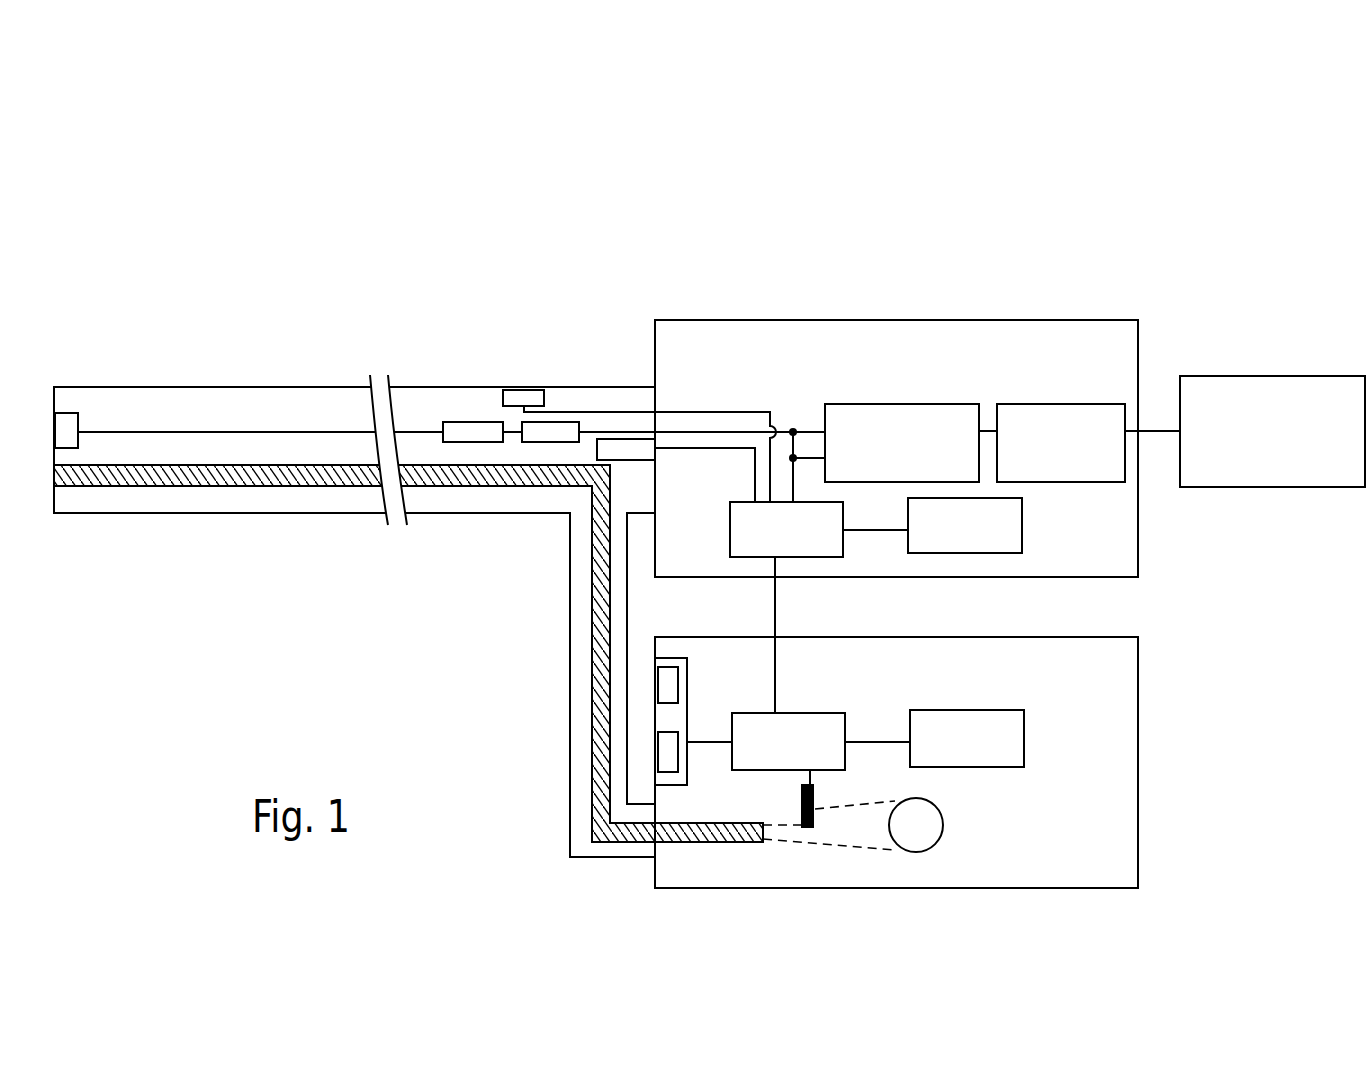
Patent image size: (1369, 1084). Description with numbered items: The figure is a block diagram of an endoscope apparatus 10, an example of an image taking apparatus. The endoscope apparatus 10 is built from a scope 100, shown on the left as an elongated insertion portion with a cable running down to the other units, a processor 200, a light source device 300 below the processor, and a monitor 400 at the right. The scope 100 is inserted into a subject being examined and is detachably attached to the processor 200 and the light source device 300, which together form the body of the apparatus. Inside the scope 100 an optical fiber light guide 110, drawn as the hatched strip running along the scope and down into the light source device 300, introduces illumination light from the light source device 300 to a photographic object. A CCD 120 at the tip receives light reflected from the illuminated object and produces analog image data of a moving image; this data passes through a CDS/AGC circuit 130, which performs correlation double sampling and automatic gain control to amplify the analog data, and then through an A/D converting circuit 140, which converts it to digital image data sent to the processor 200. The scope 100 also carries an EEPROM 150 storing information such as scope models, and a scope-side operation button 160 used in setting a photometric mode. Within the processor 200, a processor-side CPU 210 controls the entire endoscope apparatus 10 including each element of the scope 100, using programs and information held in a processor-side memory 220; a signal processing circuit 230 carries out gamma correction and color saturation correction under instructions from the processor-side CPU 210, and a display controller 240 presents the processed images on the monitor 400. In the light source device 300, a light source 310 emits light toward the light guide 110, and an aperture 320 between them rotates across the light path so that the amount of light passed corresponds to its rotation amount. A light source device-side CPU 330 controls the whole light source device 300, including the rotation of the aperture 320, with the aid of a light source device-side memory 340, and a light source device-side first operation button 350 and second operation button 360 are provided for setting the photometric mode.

The endoscope apparatus 10 is at (699, 183).
The scope 100 is at (65, 300).
The light guide 110 is at (343, 487).
The CCD 120 is at (66, 418).
The CDS/AGC circuit 130 is at (456, 428).
The A/D converting circuit 140 is at (562, 430).
The EEPROM 150 is at (630, 448).
The scope-side operation button 160 is at (512, 392).
The processor 200 is at (857, 320).
The processor-side CPU 210 is at (827, 557).
The processor-side memory 220 is at (987, 553).
The signal processing circuit 230 is at (935, 404).
The display controller 240 is at (1033, 404).
The light source device 300 is at (1138, 675).
The light source 310 is at (943, 818).
The aperture 320 is at (815, 800).
The light source device-side CPU 330 is at (820, 713).
The light source device-side memory 340 is at (947, 710).
The light source device-side first operation button 350 is at (668, 684).
The light source device-side second operation button 360 is at (668, 755).
The monitor 400 is at (1238, 376).